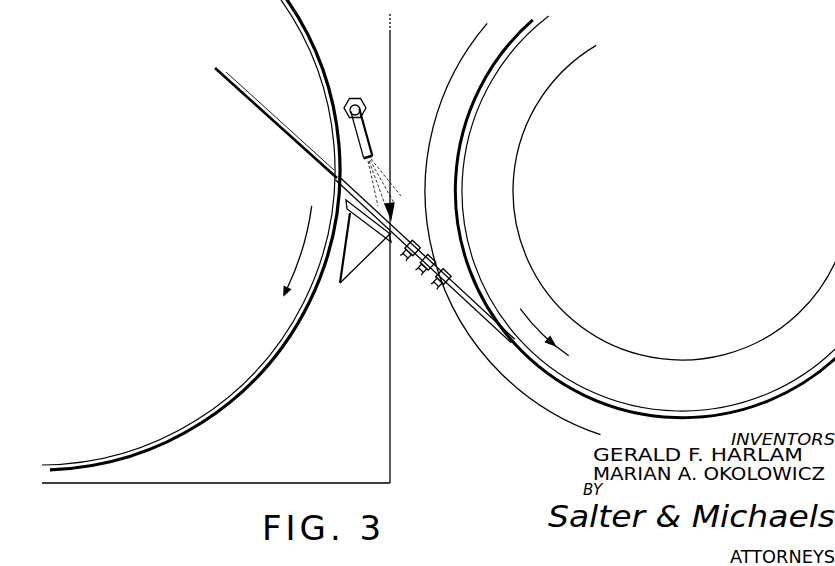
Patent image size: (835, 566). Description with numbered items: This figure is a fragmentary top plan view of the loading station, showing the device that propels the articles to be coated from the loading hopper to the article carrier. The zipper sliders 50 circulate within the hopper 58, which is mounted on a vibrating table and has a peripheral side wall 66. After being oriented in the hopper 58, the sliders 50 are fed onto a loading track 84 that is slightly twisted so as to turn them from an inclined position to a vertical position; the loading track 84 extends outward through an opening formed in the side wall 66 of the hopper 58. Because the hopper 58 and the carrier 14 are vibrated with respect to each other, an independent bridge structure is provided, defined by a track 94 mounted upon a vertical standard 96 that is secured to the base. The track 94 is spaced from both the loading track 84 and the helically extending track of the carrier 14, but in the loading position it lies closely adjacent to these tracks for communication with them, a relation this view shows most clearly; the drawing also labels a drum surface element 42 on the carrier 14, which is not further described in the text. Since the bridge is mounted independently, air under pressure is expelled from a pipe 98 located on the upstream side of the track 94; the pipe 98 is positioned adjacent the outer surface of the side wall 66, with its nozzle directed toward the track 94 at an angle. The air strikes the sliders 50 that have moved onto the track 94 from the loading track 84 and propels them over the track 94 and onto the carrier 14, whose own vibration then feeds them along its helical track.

The carrier 14 is at (655, 350).
The drum surface 42 is at (546, 294).
The slider 50 is at (418, 243).
The hopper 58 is at (273, 376).
The side wall 66 is at (326, 66).
The loading track 84 is at (288, 137).
The track 94 is at (392, 249).
The vertical standard 96 is at (367, 221).
The pipe 98 is at (369, 136).